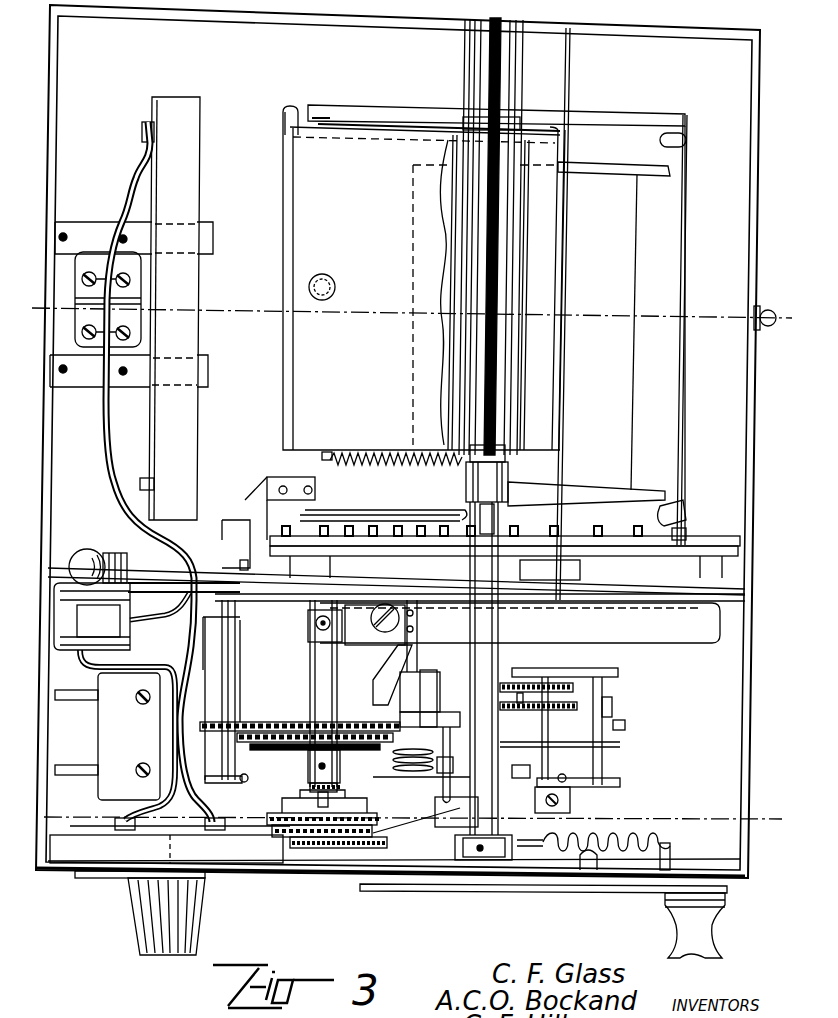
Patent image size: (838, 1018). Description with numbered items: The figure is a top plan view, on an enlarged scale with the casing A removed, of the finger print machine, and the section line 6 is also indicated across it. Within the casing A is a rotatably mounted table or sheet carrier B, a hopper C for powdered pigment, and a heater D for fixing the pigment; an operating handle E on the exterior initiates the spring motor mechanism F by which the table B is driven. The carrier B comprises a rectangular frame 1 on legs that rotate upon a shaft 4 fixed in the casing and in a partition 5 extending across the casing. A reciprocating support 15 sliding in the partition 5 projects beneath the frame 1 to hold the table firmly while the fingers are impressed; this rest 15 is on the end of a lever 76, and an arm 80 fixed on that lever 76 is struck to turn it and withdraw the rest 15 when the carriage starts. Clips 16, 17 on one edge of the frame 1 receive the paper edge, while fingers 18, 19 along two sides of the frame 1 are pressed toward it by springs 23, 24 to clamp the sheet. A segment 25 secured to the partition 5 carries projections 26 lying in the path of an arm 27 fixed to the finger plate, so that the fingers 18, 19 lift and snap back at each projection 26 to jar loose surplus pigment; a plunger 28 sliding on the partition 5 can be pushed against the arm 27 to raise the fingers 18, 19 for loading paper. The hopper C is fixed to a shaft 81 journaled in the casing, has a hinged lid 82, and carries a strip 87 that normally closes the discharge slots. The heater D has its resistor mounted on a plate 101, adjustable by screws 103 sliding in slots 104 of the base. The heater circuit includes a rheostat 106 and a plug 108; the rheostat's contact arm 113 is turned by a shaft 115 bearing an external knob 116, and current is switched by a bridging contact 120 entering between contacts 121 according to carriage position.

The casing A is at (330, 23).
The rotatably mounted table B is at (606, 314).
The hopper C is at (424, 278).
The heater D is at (212, 312).
The operating handle E is at (540, 888).
The spring motor mechanism F is at (339, 724).
The rectangular frame 1 is at (676, 372).
The shaft 4 is at (468, 80).
The partition 5 is at (626, 590).
The section line 6- 6 is at (32, 798).
The reciprocating support 15 is at (684, 530).
The clip 16 is at (686, 141).
The clip 17 is at (684, 510).
The finger 18 is at (601, 166).
The finger 19 is at (611, 496).
The spring 23 is at (358, 120).
The spring 24 is at (445, 512).
The segment 25 is at (362, 544).
The projections 26 is at (346, 528).
The arm 27 is at (252, 494).
The plunger 28 is at (222, 548).
The lever 76 is at (520, 623).
The arm 80 is at (396, 658).
The shaft 81 is at (496, 520).
The lid 82 is at (296, 318).
The strip 87 is at (365, 470).
The plate 101 is at (170, 308).
The screws 103 is at (140, 326).
The slots 104 is at (148, 282).
The rheostat 106 is at (166, 849).
The plug 108 is at (107, 736).
The contact arm 113 is at (88, 825).
The shaft 115 is at (162, 850).
The knob 116 is at (130, 918).
The bridging contact 120 is at (133, 632).
The contacts 121 is at (92, 599).